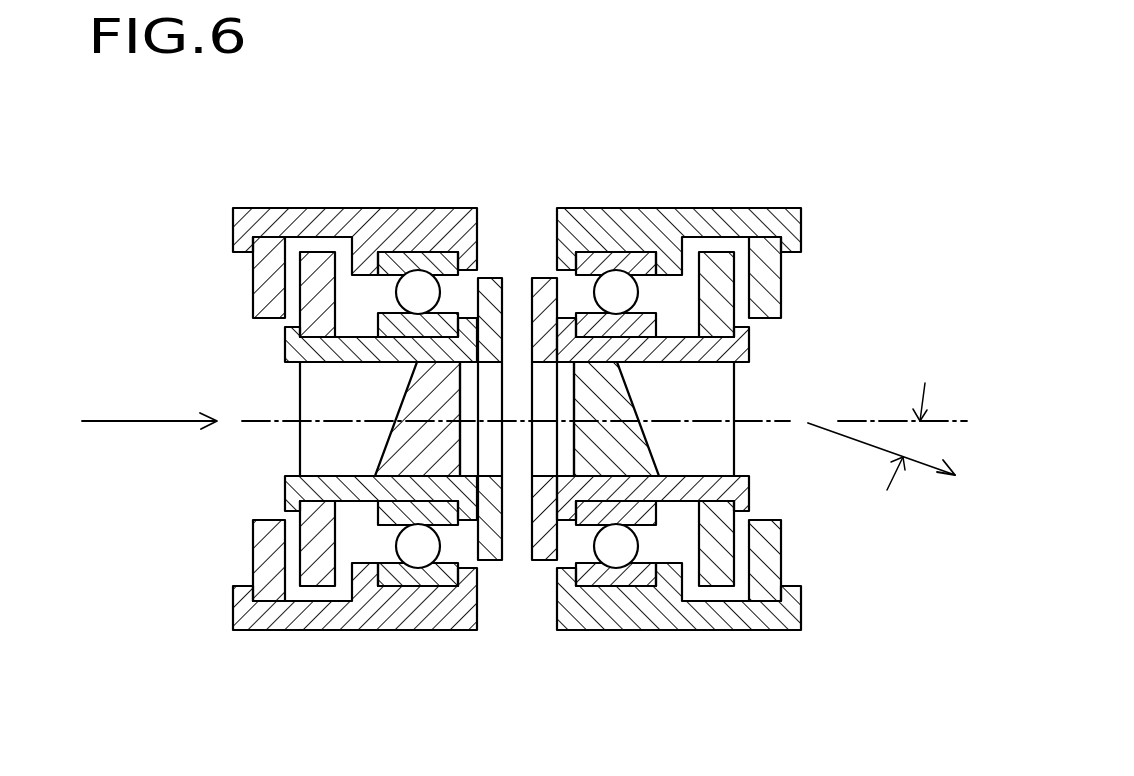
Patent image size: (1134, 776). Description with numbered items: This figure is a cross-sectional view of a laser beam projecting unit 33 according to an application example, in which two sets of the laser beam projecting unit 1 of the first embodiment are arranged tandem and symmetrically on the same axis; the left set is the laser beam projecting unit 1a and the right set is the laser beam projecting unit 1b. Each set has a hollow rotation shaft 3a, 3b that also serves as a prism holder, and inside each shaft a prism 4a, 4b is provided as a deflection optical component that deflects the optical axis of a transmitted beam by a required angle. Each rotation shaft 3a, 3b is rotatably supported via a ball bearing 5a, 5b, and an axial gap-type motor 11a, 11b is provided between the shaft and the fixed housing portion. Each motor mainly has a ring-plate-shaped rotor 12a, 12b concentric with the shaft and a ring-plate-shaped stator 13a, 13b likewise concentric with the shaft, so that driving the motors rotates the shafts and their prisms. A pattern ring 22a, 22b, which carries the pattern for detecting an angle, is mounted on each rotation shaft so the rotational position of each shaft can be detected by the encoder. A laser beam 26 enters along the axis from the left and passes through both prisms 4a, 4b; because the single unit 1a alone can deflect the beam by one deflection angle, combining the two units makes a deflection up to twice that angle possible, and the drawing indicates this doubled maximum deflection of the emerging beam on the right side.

The laser beam projecting unit 33 is at (533, 84).
The laser beam projecting unit 1 is at (276, 208).
The laser beam projecting unit 1a is at (333, 208).
The laser beam projecting unit 1b is at (692, 208).
The rotation shaft 3a is at (347, 362).
The rotation shaft 3b is at (684, 362).
The prism 4a is at (372, 450).
The prism 4b is at (645, 451).
The ball bearing 5a is at (417, 587).
The ball bearing 5b is at (618, 253).
The axial gap-type motor 11a is at (237, 325).
The axial gap-type motor 11b is at (765, 333).
The rotor 12a is at (338, 258).
The rotor 12b is at (717, 252).
The stator 13a is at (248, 280).
The stator 13b is at (783, 272).
The pattern ring 22a is at (490, 278).
The pattern ring 22b is at (540, 278).
The laser beam 26 is at (117, 422).